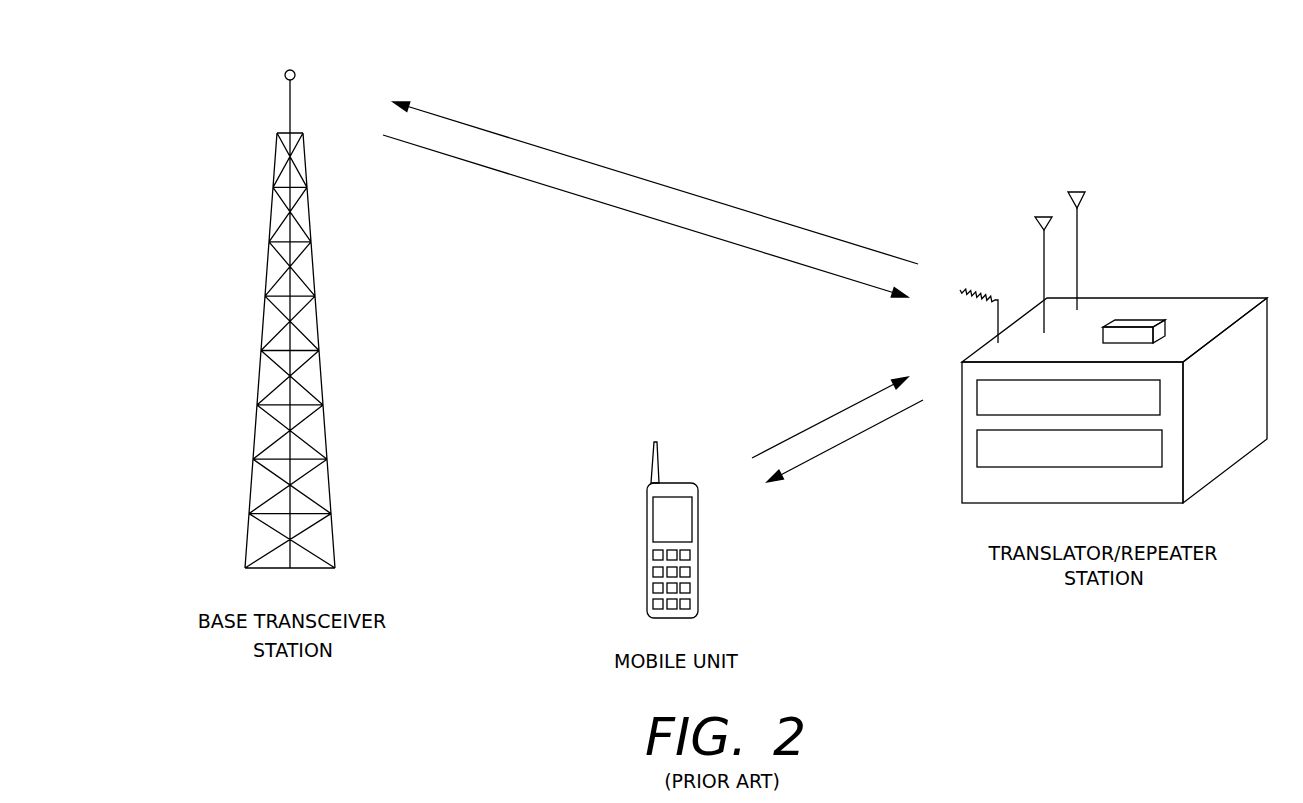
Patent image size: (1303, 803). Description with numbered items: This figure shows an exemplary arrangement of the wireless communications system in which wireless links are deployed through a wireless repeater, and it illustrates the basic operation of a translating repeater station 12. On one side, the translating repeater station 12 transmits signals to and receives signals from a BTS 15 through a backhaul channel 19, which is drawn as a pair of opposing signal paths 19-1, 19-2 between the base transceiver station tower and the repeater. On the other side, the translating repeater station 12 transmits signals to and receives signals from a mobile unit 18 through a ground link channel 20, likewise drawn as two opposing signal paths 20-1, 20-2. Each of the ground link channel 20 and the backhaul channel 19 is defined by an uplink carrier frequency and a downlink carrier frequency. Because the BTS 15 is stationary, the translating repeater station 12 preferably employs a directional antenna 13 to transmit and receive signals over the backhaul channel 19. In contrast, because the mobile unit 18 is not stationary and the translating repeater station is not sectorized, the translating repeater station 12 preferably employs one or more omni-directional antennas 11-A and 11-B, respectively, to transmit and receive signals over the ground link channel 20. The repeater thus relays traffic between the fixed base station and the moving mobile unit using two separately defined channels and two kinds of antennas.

The omni-directional antenna 11-A is at (1043, 216).
The omni-directional antenna 11-B is at (1076, 192).
The translating repeater station 12 is at (1127, 297).
The directional antenna 13 is at (974, 264).
The BTS 15 is at (320, 361).
The mobile unit 18 is at (647, 533).
The backhaul channel 19 is at (622, 145).
The signal path from repeater to base station 19-1 is at (714, 197).
The signal path from base station to repeater 19-2 is at (690, 232).
The ground link channel 20 is at (864, 458).
The signal path from mobile unit to repeater 20-1 is at (828, 417).
The signal path from repeater to mobile unit 20-2 is at (842, 443).